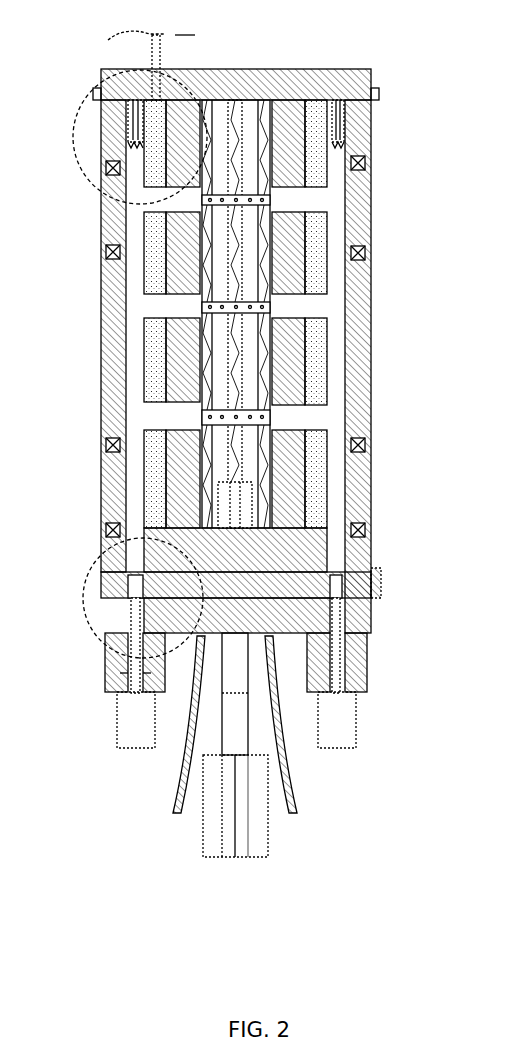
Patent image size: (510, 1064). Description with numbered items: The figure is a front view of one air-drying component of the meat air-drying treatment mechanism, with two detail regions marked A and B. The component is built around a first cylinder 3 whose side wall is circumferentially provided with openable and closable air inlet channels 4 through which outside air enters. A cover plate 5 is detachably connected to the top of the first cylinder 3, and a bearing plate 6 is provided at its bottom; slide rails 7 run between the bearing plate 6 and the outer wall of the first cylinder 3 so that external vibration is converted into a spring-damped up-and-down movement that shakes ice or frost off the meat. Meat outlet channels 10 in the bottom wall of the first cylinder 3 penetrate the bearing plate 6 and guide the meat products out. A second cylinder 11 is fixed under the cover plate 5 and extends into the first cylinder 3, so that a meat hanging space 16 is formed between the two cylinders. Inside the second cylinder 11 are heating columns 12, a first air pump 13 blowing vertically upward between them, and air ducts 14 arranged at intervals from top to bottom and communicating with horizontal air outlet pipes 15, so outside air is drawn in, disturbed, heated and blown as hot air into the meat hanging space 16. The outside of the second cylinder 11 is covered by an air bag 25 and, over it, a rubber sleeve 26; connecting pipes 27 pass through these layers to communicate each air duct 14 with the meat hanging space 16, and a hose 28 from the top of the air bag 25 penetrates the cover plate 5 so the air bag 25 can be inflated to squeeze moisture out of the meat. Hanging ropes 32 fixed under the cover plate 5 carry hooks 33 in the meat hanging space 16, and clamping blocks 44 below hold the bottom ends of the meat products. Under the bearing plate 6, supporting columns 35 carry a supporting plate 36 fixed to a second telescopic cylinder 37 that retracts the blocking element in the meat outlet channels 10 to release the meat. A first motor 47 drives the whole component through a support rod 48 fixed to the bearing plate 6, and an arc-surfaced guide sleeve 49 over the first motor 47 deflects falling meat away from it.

The first cylinder 3 is at (118, 376).
The air inlet channel 4 is at (104, 446).
The cover plate 5 is at (371, 70).
The bearing plate 6 is at (352, 700).
The slide rail 7 is at (362, 610).
The meat outlet channel 10 is at (352, 634).
The second cylinder 11 is at (292, 461).
The heating column 12 is at (300, 374).
The first air pump 13 is at (250, 506).
The air duct 14 is at (262, 306).
The air outlet pipe 15 is at (262, 201).
The meat hanging space 16 is at (322, 228).
The air bag 25 is at (146, 479).
The rubber sleeve 26 is at (143, 268).
The connecting pipe 27 is at (300, 416).
The hose 28 is at (160, 55).
The hanging rope 32 is at (340, 124).
The hook 33 is at (344, 144).
The supporting column 35 is at (132, 651).
The supporting plate 36 is at (112, 700).
The second telescopic cylinder 37 is at (135, 728).
The clamping block 44 is at (382, 578).
The first motor 47 is at (236, 857).
The support rod 48 is at (228, 668).
The guide sleeve 49 is at (295, 813).
The detail view A is at (97, 626).
The detail view B is at (74, 128).